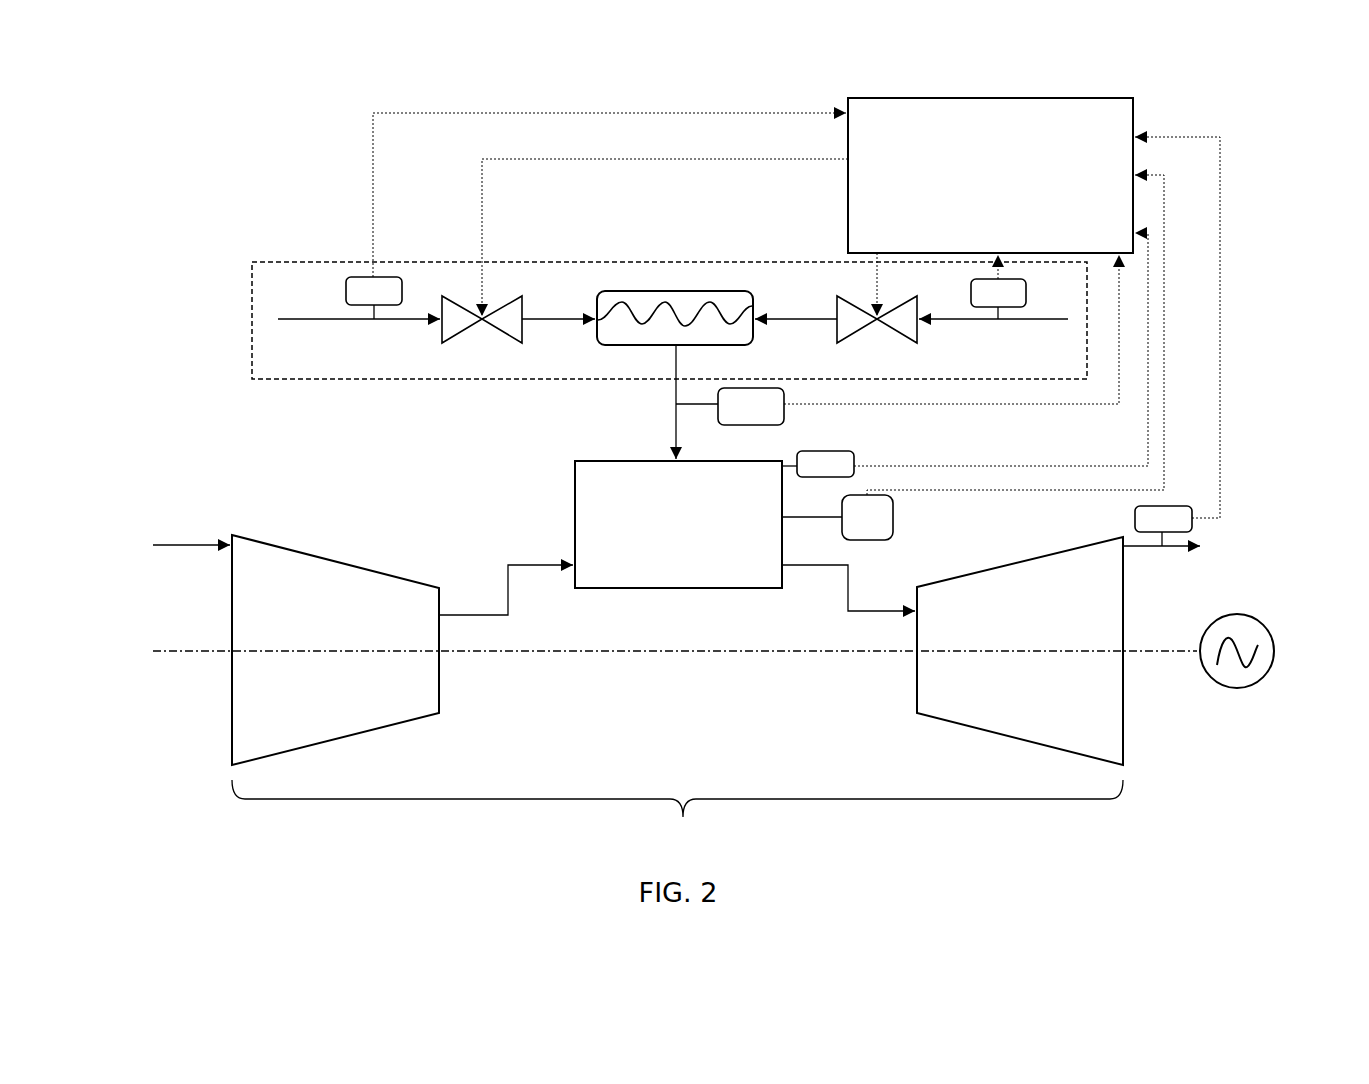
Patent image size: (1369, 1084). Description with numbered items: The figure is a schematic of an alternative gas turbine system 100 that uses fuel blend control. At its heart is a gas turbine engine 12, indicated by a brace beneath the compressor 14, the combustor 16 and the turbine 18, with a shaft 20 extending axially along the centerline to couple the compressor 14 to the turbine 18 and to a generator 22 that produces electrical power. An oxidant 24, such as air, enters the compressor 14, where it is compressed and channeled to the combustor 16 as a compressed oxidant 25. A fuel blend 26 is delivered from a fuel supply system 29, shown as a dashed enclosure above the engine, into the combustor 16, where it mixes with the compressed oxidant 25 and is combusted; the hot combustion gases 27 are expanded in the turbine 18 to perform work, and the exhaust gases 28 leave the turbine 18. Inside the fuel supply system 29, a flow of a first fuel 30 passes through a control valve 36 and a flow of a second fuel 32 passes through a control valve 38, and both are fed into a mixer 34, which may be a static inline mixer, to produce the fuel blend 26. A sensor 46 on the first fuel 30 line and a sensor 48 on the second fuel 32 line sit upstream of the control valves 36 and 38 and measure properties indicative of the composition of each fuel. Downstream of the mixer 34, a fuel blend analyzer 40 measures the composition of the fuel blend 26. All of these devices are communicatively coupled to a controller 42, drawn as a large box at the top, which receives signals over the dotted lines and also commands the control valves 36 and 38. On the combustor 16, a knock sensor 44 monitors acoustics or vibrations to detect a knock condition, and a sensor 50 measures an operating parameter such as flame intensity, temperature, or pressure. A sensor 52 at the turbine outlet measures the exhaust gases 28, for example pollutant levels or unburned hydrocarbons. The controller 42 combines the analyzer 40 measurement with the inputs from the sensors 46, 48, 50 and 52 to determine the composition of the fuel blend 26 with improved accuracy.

The gas turbine system 100 is at (118, 292).
The gas turbine engine 12 is at (677, 819).
The compressor 14 is at (335, 650).
The combustor 16 is at (678, 524).
The turbine 18 is at (1020, 651).
The shaft 20 is at (675, 669).
The generator 22 is at (1274, 643).
The oxidant 24 is at (173, 544).
The compressed oxidant 25 is at (506, 589).
The fuel blend 26 is at (654, 402).
The hot combustion gases 27 is at (848, 588).
The exhaust gases 28 is at (1180, 551).
The fuel supply system 29 is at (248, 350).
The first fuel 30 is at (358, 338).
The second fuel 32 is at (993, 338).
The mixer 34 is at (675, 304).
The control valve 36 is at (645, 260).
The control valve 38 is at (836, 307).
The fuel blend analyzer 40 is at (897, 340).
The controller 42 is at (990, 175).
The knock sensor 44 is at (973, 357).
The sensor 46 is at (596, 216).
The sensor 48 is at (998, 287).
The sensor 50 is at (965, 356).
The sensor 52 is at (1177, 341).